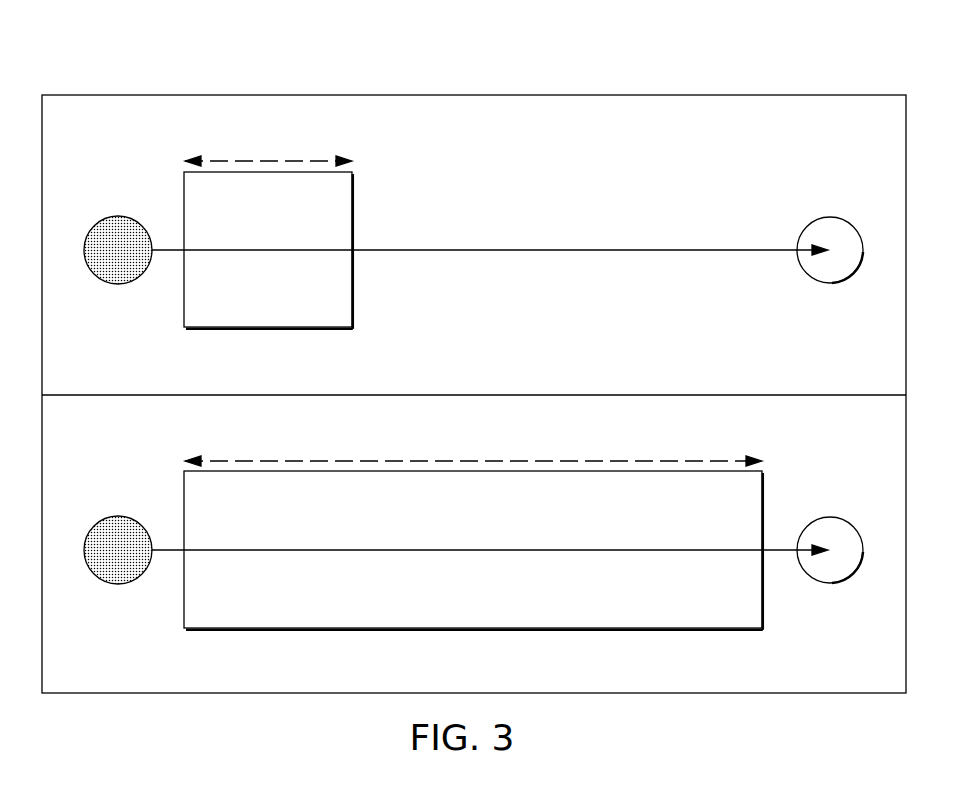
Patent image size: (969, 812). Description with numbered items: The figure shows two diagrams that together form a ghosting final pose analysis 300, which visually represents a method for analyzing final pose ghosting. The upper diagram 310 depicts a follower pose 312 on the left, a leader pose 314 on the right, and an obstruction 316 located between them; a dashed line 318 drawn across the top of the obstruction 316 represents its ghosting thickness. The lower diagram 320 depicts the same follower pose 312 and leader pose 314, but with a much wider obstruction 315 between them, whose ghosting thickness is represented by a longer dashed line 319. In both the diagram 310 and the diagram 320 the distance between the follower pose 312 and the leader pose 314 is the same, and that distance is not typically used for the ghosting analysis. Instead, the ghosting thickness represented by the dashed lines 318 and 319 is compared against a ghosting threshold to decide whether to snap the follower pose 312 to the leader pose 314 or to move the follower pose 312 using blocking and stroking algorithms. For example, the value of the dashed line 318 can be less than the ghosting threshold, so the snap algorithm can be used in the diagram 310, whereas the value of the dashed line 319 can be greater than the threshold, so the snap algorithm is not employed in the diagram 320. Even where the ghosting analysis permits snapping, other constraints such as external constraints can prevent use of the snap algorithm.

The ghosting final pose analysis 300 is at (321, 64).
The diagram 310 is at (120, 160).
The diagram 320 is at (120, 460).
The follower pose 312 is at (108, 284).
The leader pose 314 is at (836, 218).
The obstruction 316 is at (268, 330).
The dashed line 318 is at (258, 160).
The obstruction 315 is at (428, 630).
The dashed line 319 is at (470, 460).